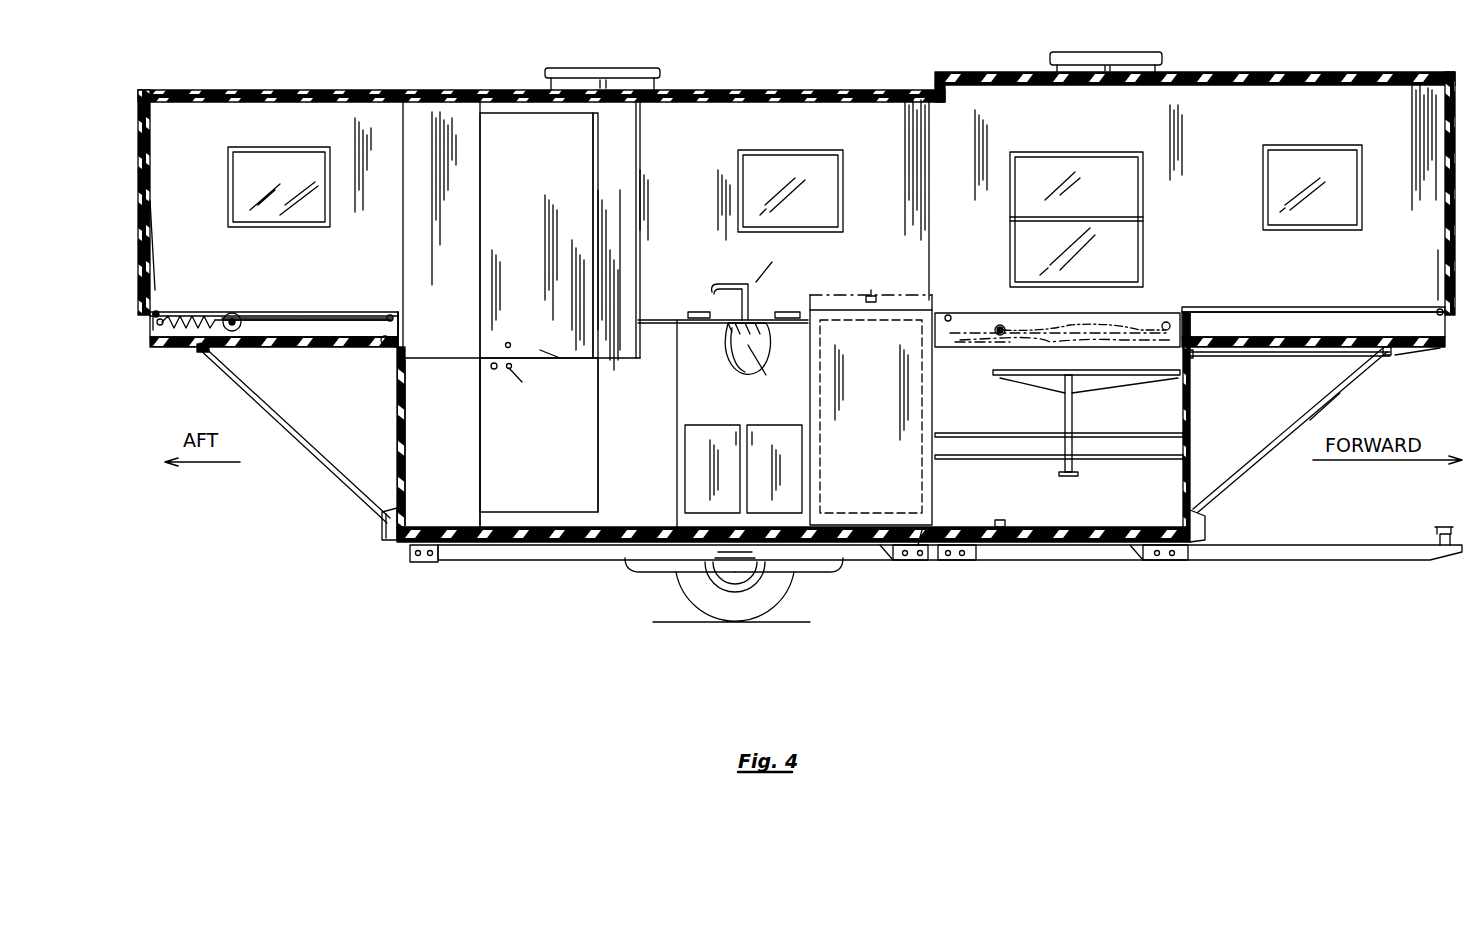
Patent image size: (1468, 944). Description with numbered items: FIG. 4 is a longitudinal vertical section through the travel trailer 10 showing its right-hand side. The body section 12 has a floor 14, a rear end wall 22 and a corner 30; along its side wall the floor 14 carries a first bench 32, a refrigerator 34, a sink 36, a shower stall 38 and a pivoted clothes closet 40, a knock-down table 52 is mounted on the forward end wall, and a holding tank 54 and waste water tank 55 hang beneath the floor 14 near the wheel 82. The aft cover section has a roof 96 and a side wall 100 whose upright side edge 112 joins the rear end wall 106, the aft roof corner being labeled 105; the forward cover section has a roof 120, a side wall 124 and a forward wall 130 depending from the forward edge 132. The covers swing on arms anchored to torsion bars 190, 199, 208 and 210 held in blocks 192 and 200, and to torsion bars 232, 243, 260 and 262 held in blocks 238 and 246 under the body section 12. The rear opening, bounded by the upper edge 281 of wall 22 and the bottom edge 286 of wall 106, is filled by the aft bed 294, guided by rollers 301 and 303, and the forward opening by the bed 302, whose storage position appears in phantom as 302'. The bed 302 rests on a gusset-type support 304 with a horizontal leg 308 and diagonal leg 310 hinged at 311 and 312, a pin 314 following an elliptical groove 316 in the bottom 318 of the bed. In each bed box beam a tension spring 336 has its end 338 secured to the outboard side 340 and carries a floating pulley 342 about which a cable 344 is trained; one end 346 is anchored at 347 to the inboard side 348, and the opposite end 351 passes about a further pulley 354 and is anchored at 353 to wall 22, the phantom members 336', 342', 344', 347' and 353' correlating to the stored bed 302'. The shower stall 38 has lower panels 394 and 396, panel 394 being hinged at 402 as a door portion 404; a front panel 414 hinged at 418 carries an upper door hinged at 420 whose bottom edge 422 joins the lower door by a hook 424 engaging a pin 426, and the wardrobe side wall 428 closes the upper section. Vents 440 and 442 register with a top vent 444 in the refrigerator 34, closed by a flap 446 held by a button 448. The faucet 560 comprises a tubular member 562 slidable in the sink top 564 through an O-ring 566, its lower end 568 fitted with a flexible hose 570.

The trailer 10 is at (1160, 486).
The body section 12 is at (397, 436).
The floor 14 is at (632, 527).
The end wall 22 is at (397, 470).
The corner 30 is at (382, 546).
The first bench 32 is at (1110, 459).
The refrigerator 34 is at (882, 418).
The sink 36 is at (733, 420).
The shower stall 38 is at (557, 283).
The pivoted clothes closet 40 is at (470, 256).
The knock-down table 52 is at (1010, 377).
The holding tank 54 is at (635, 570).
The waste water tank 55 is at (810, 572).
The wheel 82 is at (715, 605).
The roof 96 is at (302, 90).
The side wall 100 is at (762, 132).
The roof corner 105 is at (140, 89).
The rear end wall 106 is at (150, 128).
The upright side edge 112 is at (152, 246).
The roof 120 is at (1265, 72).
The side wall 124 is at (1225, 188).
The forward wall 130 is at (1445, 255).
The forward edge 132 is at (1450, 72).
The torsion bar 190 is at (432, 556).
The block 192 is at (470, 560).
The torsion bar 199 is at (905, 558).
The block 200 is at (888, 556).
The torsion bar 208 is at (918, 530).
The torsion bar 210 is at (418, 556).
The torsion bar 232 is at (948, 557).
The block 238 is at (964, 557).
The torsion bar 243 is at (1175, 557).
The block 246 is at (1140, 556).
The torsion bar 260 is at (1157, 558).
The torsion bar 262 is at (1000, 520).
The upper edge 281 is at (402, 326).
The bottom edge 286 is at (1166, 332).
The bed 294 is at (176, 332).
The guide roller 301 is at (158, 311).
The bed 302 is at (1313, 303).
The bed 302' is at (1057, 340).
The guide roller 303 is at (1437, 310).
The gusset-type support 304 is at (1348, 412).
The horizontal leg 308 is at (1290, 357).
The diagonal leg 310 is at (1290, 425).
The hinge mounting 311 is at (1193, 354).
The hinge mounting 312 is at (1205, 520).
The pin 314 is at (1313, 322).
The elliptical groove 316 is at (1392, 356).
The bottom 318 is at (1433, 350).
The tension spring 336 is at (233, 301).
The tension spring 336' is at (1081, 309).
The spring end 338 is at (165, 318).
The outboard side 340 is at (150, 335).
The floating pulley 342 is at (257, 302).
The floating pulley 342' is at (1011, 310).
The cable 344 is at (307, 293).
The cable 344' is at (981, 353).
The cable end 346 is at (375, 318).
The anchor point 347 is at (376, 289).
The anchor point 347' is at (967, 297).
The inboard side 348 is at (398, 314).
The cable end 351 is at (358, 350).
The anchor point 353 is at (418, 342).
The anchor point 353' is at (1220, 313).
The further pulley 354 is at (380, 350).
The upstanding panel 394 is at (567, 473).
The upstanding panel 396 is at (480, 462).
The hinge 402 is at (597, 428).
The door portion 404 is at (495, 418).
The front panel 414 is at (622, 244).
The hinge 418 is at (640, 162).
The hinge 420 is at (594, 158).
The bottom edge 422 is at (545, 346).
The hook 424 is at (532, 340).
The pin 426 is at (516, 381).
The side wall 428 is at (482, 200).
The vent 440 is at (1150, 53).
The vent 442 is at (632, 68).
The top vent 444 is at (905, 295).
The flap 446 is at (832, 295).
The button 448 is at (871, 290).
The water faucet 560 is at (762, 274).
The tubular member 562 is at (748, 303).
The sink top 564 is at (730, 312).
The O-ring 566 is at (760, 338).
The lower end 568 is at (728, 338).
The flexible hose 570 is at (752, 350).